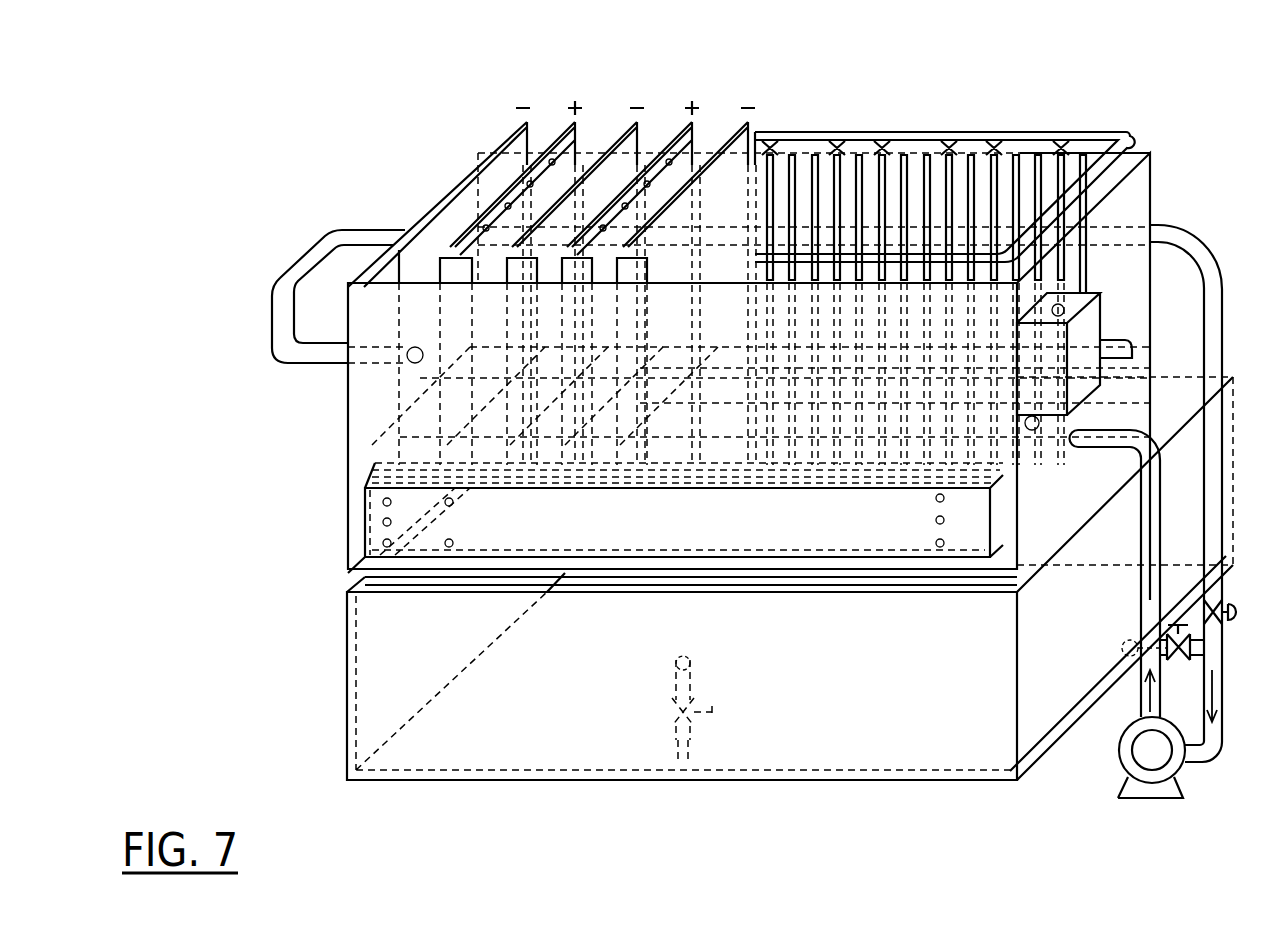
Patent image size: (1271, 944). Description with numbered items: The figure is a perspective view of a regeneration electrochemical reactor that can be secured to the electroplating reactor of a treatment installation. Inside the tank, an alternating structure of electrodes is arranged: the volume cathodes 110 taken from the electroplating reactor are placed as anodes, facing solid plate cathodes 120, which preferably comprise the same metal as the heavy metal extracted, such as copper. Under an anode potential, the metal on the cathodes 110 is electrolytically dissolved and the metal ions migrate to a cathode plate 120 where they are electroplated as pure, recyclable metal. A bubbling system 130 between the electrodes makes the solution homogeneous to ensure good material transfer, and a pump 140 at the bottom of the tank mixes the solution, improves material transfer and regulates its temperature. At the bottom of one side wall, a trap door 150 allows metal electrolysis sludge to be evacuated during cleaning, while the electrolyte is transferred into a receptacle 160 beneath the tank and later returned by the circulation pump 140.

The cathodes 110 is at (553, 128).
The cathodes 120 is at (503, 140).
The bubbling system 130 is at (878, 137).
The pump 140 is at (1120, 757).
The trap door 150 is at (373, 528).
The receptacle 160 is at (480, 737).